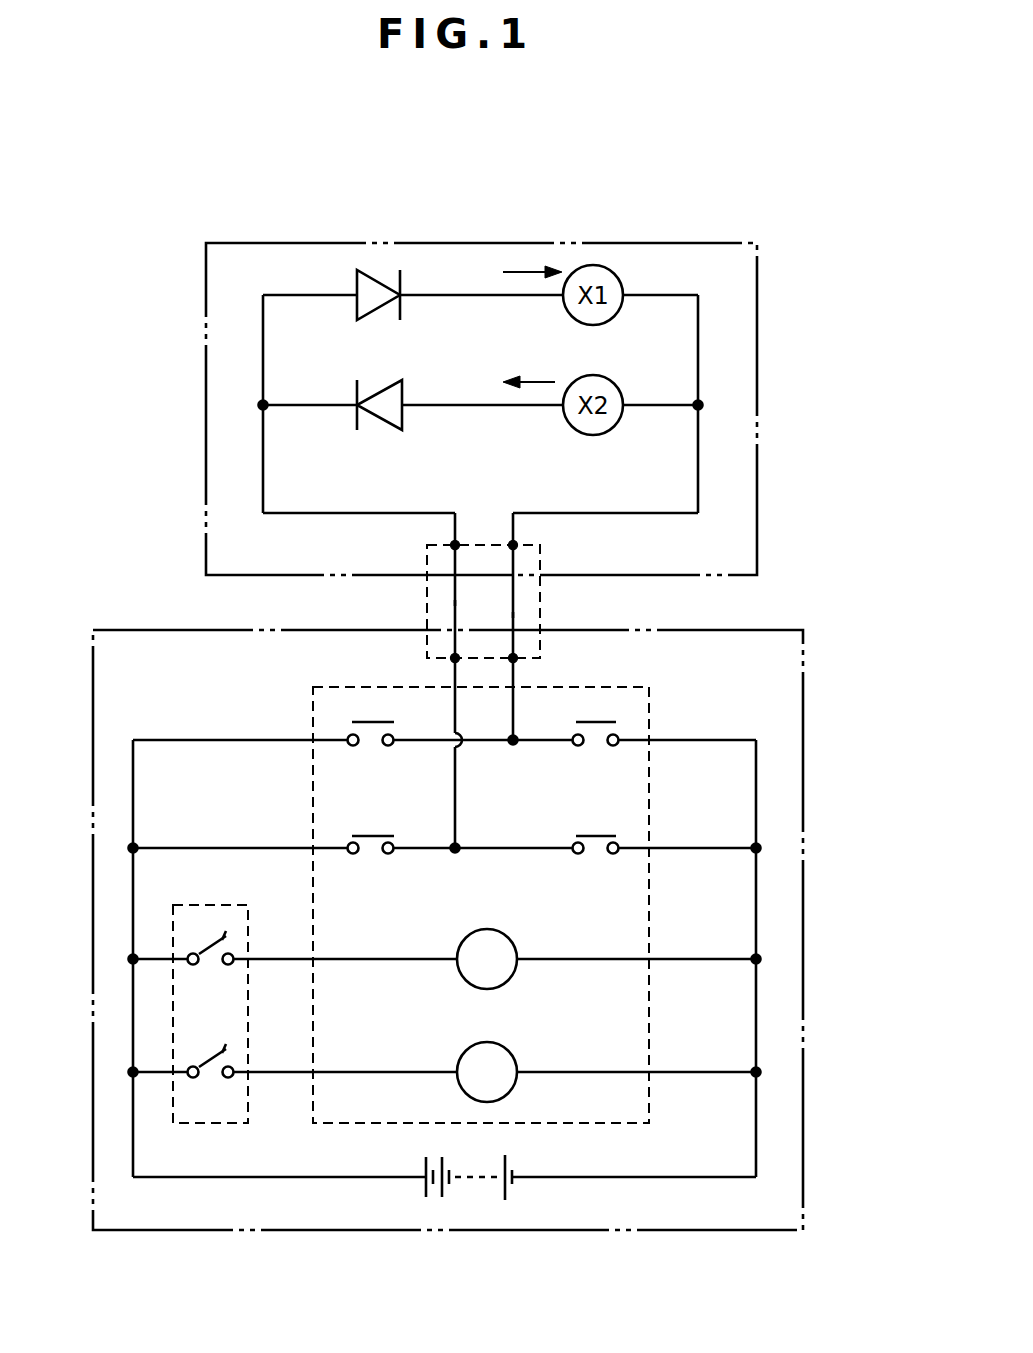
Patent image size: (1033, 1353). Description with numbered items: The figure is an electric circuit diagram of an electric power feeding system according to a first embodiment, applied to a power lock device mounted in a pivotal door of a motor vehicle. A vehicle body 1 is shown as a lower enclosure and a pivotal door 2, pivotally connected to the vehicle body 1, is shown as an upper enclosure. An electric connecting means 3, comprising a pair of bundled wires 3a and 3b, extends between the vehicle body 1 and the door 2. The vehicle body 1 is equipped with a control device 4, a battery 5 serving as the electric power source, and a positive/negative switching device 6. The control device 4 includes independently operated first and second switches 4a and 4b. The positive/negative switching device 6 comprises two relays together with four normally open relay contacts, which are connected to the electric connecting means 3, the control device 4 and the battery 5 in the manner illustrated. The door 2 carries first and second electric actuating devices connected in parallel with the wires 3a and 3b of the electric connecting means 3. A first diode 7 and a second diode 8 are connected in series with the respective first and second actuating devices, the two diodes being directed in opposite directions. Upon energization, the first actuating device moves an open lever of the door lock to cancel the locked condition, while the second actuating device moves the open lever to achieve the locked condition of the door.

The vehicle body 1 is at (803, 692).
The pivotal door 2 is at (757, 302).
The electric connecting means 3 is at (540, 600).
The wire 3a is at (455, 605).
The wire 3b is at (513, 617).
The control device 4 is at (236, 1027).
The first switch 4a is at (218, 938).
The second switch 4b is at (222, 1048).
The battery 5 is at (505, 1190).
The positive/negative switching device 6 is at (605, 1123).
The first diode 7 is at (358, 272).
The second diode 8 is at (384, 386).